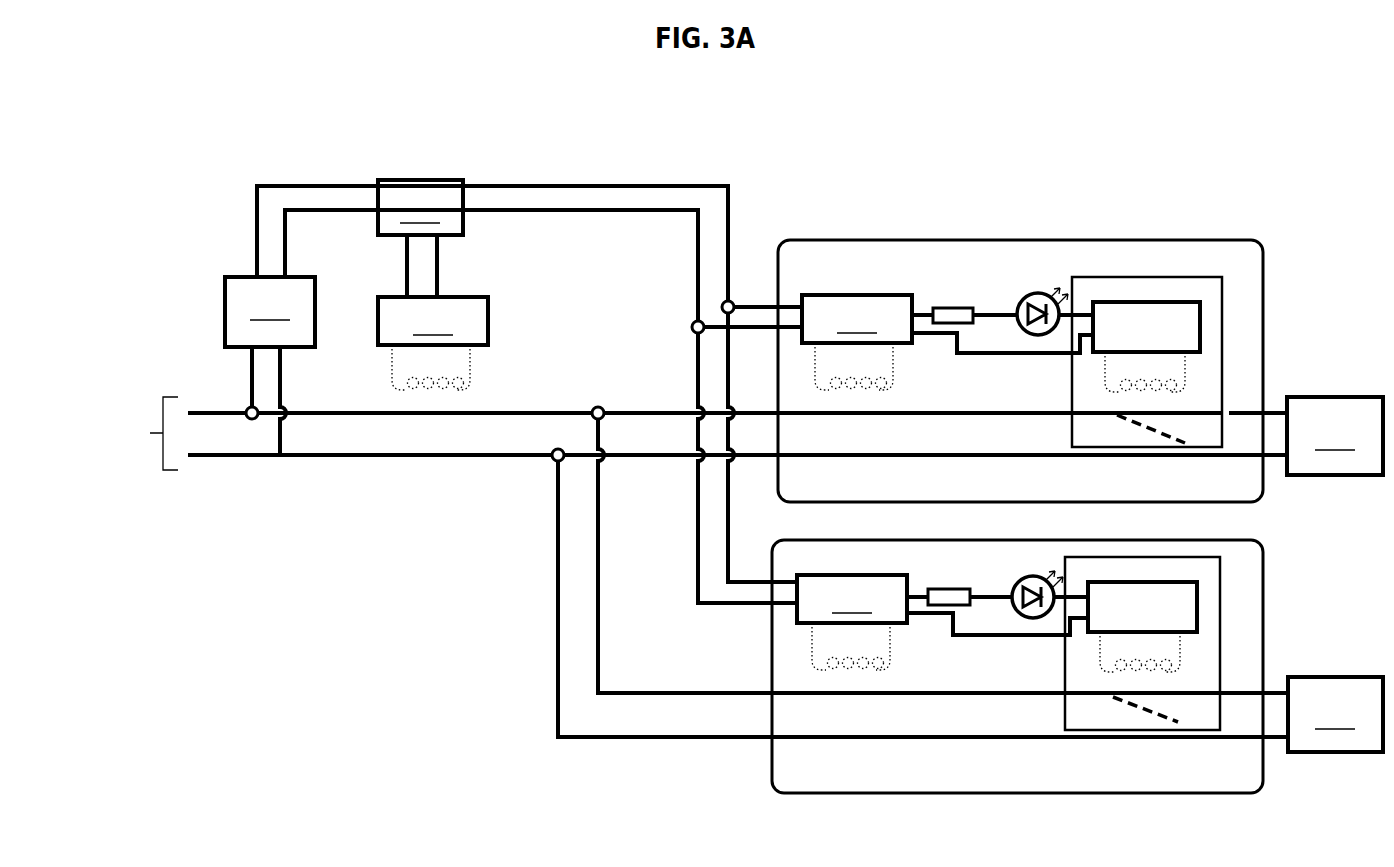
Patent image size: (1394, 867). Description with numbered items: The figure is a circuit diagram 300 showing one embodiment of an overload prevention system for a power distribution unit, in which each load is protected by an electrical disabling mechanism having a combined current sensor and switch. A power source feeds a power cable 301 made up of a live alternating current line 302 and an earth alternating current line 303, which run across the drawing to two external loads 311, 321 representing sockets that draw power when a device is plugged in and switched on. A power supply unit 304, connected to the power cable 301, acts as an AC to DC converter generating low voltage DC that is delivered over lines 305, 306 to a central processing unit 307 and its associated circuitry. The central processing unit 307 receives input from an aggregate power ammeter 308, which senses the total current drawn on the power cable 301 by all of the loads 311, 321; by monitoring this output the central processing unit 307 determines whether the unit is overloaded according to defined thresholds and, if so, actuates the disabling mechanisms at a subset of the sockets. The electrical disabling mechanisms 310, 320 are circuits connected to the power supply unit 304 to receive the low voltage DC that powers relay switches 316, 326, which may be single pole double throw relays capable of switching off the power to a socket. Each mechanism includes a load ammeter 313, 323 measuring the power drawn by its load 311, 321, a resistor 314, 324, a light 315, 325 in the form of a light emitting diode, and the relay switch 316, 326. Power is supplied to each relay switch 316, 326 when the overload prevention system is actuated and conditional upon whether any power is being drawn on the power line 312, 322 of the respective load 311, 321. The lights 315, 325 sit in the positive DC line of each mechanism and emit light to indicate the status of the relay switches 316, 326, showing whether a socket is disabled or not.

The circuit diagram 300 is at (266, 96).
The power cable 301 is at (150, 433).
The live alternating current line 302 is at (333, 413).
The earth alternating current line 303 is at (393, 455).
The power supply unit 304 is at (270, 366).
The power line 305 is at (253, 212).
The power line 306 is at (283, 248).
The central processing unit 307 is at (420, 238).
The aggregate power ammeter 308 is at (433, 343).
The electrical disabling mechanism 310 is at (1122, 238).
The load 311 is at (1335, 436).
The power line 312 is at (888, 418).
The load ammeter 313 is at (947, 342).
The resistor 314 is at (958, 308).
The light 315 is at (1037, 293).
The relay switch 316 is at (1190, 275).
The electrical disabling mechanism 320 is at (1265, 635).
The load 321 is at (967, 579).
The power line 322 is at (932, 697).
The load ammeter 323 is at (942, 622).
The resistor 324 is at (943, 588).
The light 325 is at (1015, 575).
The relay switch 326 is at (1222, 572).